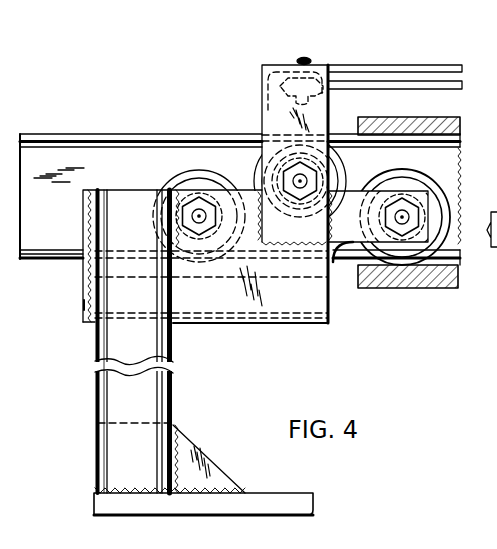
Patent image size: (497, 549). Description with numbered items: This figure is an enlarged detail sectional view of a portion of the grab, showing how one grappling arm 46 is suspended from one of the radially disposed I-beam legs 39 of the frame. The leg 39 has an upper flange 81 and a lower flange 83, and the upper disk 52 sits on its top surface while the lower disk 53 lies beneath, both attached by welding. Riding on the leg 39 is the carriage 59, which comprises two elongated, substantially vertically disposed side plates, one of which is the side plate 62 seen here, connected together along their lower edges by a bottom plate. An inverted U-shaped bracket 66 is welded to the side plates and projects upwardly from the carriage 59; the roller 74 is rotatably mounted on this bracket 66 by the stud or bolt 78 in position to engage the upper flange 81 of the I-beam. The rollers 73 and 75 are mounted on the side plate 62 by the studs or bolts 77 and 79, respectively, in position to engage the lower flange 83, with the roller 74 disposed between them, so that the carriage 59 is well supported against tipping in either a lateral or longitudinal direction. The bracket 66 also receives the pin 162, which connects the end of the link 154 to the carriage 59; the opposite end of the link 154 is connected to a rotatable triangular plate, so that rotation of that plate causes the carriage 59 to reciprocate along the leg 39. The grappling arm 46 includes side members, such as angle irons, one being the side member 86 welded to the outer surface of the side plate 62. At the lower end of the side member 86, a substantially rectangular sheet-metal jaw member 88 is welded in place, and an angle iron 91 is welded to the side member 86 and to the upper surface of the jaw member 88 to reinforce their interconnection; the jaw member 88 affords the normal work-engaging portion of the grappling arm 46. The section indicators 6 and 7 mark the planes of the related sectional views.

The leg 39 is at (63, 133).
The upper flange 81 is at (128, 140).
The lower flange 83 is at (62, 260).
The upper disk 52 is at (441, 118).
The lower disk 53 is at (443, 290).
The link 154 is at (366, 63).
The inverted U-shaped bracket 66 is at (262, 83).
The pin 162 is at (306, 51).
The roller 74 is at (262, 178).
The roller 75 is at (205, 170).
The stud or bolt 78 is at (303, 182).
The roller 73 is at (435, 184).
The stud or bolt 79 is at (198, 215).
The stud or bolt 77 is at (404, 216).
The carriage 59 is at (79, 299).
The side plate 62 is at (82, 306).
The grappling arm 46 is at (93, 402).
The side member 86 is at (152, 402).
The angle iron 91 is at (213, 473).
The jaw member 88 is at (283, 505).
The section line 6- 6 is at (186, 48).
The section line 7- 7 is at (301, 62).